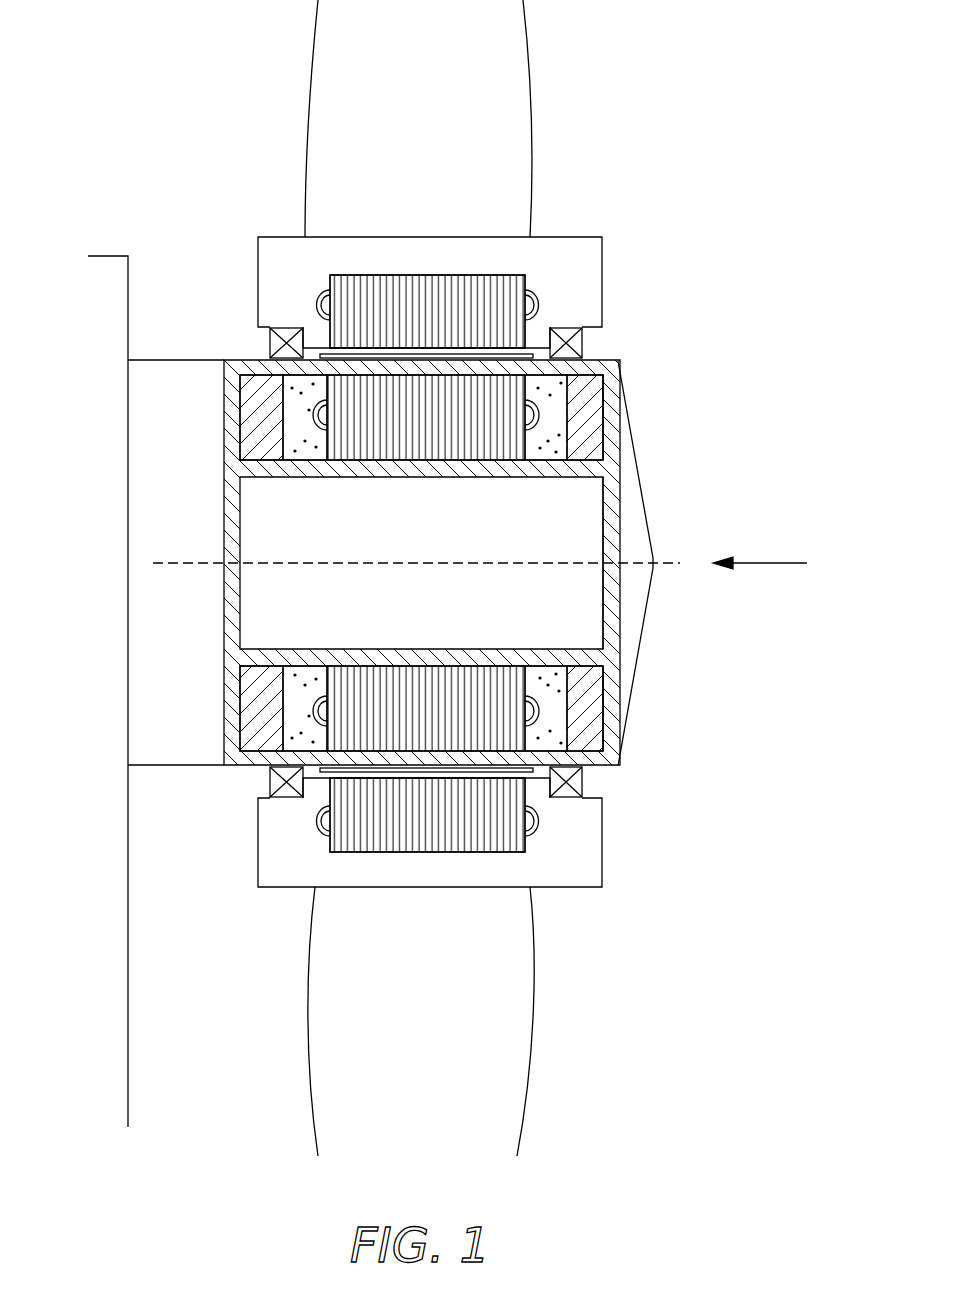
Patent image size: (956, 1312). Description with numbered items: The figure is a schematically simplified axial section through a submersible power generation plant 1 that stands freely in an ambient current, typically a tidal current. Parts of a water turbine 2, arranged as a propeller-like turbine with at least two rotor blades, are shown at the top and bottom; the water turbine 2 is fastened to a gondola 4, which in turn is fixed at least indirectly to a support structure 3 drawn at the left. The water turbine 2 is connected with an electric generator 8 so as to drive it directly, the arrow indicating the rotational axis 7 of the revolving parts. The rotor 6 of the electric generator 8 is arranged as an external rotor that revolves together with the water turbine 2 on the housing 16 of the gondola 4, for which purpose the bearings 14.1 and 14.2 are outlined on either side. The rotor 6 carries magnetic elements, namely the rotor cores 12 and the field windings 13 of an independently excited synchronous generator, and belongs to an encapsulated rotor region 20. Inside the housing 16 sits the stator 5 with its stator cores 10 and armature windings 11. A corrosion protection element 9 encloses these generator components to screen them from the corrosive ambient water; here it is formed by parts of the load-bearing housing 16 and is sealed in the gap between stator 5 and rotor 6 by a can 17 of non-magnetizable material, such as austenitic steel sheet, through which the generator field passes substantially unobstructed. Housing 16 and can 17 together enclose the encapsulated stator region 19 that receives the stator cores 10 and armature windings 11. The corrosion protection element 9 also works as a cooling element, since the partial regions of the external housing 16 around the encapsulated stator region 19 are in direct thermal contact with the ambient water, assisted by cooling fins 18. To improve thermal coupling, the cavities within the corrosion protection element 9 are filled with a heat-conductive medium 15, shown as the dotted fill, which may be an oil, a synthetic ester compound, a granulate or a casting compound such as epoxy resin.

The submersible power generation plant 1 is at (688, 897).
The water turbine 2 is at (498, 110).
The support structure 3 is at (84, 302).
The gondola 4 is at (279, 531).
The stator 5 is at (548, 358).
The rotor 6 is at (508, 303).
The rotational axis 7 is at (673, 563).
The electric generator 8 is at (407, 516).
The corrosion protection element 9 is at (232, 402).
The stator cores 10 is at (507, 443).
The armature windings 11 is at (538, 432).
The rotor cores 12 is at (455, 272).
The field windings 13 is at (305, 302).
The bearing 14.1 is at (270, 347).
The bearing 14.2 is at (578, 340).
The heat-conductive medium 15 is at (550, 389).
The housing 16 is at (613, 420).
The can 17 is at (520, 350).
The cooling fins 18 is at (583, 447).
The encapsulated stator region 19 is at (302, 446).
The encapsulated rotor region 20 is at (578, 262).